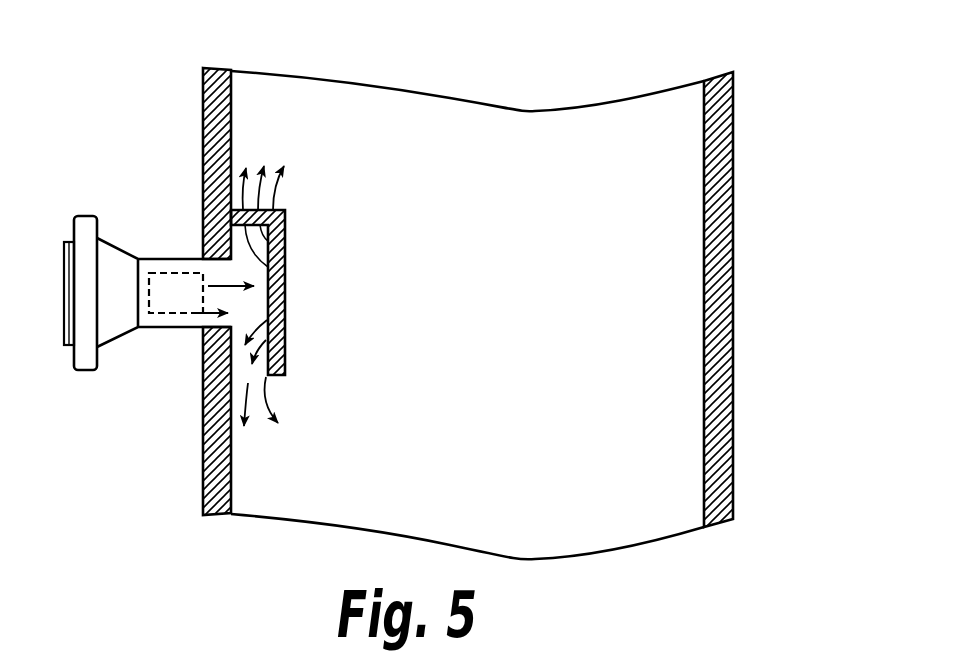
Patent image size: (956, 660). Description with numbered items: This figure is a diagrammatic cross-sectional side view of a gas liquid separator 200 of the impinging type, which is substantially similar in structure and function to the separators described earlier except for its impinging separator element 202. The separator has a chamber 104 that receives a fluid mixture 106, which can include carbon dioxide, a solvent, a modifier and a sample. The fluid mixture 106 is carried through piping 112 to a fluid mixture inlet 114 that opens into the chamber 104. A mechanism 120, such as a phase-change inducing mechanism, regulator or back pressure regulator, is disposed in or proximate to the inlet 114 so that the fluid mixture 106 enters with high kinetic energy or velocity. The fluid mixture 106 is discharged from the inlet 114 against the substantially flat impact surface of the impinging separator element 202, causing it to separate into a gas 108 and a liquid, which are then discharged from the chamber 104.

The gas liquid separator 200 is at (475, 84).
The chamber 104 is at (733, 124).
The gas 108 is at (615, 250).
The fluid mixture 106 is at (110, 277).
The piping 112 is at (112, 345).
The fluid mixture inlet 114 is at (201, 357).
The mechanism 120 is at (153, 273).
The impinging separator element 202 is at (285, 352).